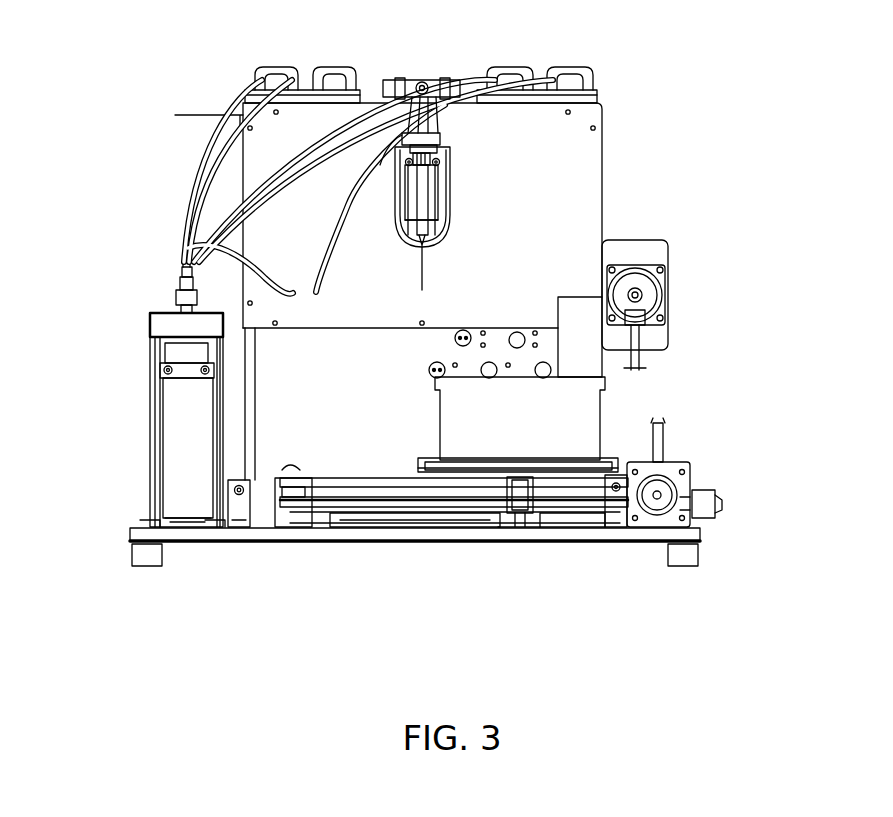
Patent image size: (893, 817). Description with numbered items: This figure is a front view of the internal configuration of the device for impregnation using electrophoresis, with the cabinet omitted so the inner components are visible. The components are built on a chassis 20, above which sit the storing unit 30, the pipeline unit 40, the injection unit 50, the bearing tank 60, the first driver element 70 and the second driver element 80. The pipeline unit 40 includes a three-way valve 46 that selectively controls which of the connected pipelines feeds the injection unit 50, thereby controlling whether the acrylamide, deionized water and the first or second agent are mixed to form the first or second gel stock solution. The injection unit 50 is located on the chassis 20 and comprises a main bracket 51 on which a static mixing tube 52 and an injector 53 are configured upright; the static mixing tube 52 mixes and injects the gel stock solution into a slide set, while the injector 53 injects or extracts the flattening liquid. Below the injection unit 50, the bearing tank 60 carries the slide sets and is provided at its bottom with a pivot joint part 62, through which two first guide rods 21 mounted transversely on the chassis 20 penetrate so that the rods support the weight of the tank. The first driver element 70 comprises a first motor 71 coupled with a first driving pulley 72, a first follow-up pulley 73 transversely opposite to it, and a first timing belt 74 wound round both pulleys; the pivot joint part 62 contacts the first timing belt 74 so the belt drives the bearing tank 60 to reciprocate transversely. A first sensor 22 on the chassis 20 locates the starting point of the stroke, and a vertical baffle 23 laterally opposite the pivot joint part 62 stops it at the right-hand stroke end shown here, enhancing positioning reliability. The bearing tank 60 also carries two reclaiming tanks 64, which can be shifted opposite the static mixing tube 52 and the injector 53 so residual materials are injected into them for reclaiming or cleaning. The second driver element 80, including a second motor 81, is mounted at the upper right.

The chassis 20 is at (226, 549).
The first guide rods 21 is at (368, 500).
The first sensor 22 is at (485, 528).
The baffle 23 is at (552, 530).
The storing unit 30 is at (150, 418).
The pipeline unit 40 is at (233, 93).
The three-way valve 46 is at (418, 82).
The injection unit 50 is at (463, 145).
The main bracket 51 is at (443, 137).
The static mixing tube 52 is at (432, 185).
The injector 53 is at (423, 270).
The bearing tank 60 is at (582, 413).
The pivot joint part 62 is at (518, 522).
The reclaiming tanks 64 is at (580, 358).
The first driver element 70 is at (705, 509).
The first motor 71 is at (688, 483).
The first driving pulley 72 is at (659, 503).
The first follow-up pulley 73 is at (291, 487).
The first timing belt 74 is at (425, 470).
The second driver element 80 is at (679, 265).
The second motor 81 is at (668, 293).